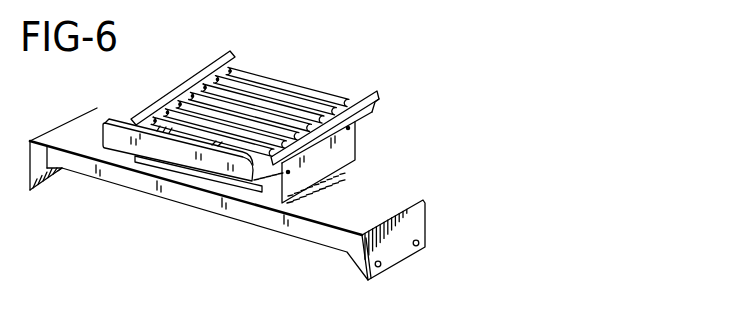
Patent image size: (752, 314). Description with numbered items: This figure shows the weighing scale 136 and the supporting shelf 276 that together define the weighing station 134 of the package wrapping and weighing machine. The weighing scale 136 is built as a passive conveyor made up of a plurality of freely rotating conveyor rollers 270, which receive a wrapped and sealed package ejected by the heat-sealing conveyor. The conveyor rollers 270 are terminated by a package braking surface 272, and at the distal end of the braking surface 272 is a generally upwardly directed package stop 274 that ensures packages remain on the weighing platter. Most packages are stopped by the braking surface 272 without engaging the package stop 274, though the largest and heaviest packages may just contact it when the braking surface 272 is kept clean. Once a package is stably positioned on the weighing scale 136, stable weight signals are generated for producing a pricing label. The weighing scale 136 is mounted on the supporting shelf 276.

The weighing station 134 is at (285, 102).
The weighing scale 136 is at (353, 158).
The conveyor rollers 270 is at (270, 120).
The package braking surface 272 is at (188, 137).
The package stop 274 is at (110, 135).
The supporting shelf 276 is at (247, 208).